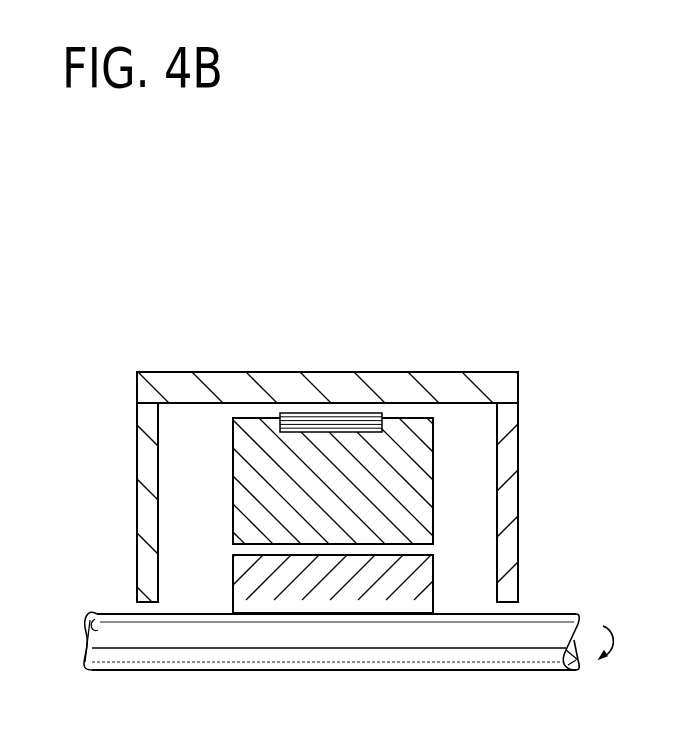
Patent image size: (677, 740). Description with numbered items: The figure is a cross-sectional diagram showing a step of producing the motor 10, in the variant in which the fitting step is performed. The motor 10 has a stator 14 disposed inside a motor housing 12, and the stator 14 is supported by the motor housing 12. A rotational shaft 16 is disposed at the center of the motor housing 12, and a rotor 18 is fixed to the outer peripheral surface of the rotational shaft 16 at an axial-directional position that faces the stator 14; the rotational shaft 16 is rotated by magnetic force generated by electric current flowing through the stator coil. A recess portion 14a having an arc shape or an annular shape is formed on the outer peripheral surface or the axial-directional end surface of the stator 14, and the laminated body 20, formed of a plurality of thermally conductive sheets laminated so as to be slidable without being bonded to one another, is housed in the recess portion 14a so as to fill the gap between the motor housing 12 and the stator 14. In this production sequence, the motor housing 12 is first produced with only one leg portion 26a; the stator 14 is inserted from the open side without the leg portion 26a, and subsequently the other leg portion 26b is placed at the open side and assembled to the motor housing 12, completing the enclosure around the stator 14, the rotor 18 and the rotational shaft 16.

The motor 10 is at (367, 227).
The motor housing 12 is at (152, 390).
The stator 14 is at (422, 457).
The recess portion 14a is at (296, 425).
The rotational shaft 16 is at (540, 609).
The rotor 18 is at (418, 585).
The laminated body 20 is at (366, 398).
The leg portion 26a is at (148, 518).
The leg portion 26b is at (508, 478).